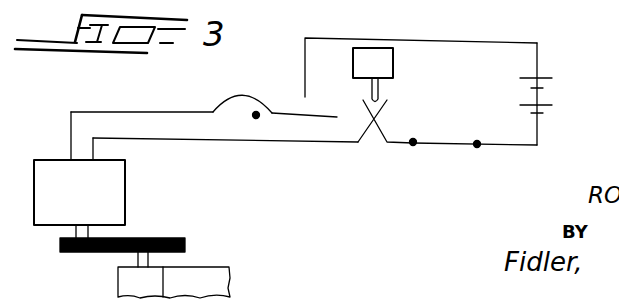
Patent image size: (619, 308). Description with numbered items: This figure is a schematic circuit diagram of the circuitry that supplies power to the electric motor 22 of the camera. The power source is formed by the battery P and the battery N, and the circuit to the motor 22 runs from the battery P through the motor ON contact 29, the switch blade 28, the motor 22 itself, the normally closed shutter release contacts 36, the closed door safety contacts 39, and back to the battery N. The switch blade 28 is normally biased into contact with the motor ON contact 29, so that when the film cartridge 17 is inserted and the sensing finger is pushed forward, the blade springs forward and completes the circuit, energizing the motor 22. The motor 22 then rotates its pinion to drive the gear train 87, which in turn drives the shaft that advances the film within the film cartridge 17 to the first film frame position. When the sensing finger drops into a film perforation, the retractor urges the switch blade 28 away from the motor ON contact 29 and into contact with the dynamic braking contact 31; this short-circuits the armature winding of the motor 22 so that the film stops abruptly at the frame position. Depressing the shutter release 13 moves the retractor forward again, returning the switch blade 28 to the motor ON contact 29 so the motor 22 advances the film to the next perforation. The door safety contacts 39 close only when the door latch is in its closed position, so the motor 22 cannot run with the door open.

The shutter release 13 is at (382, 63).
The film cartridge 17 is at (200, 278).
The motor 22 is at (79, 168).
The switch blade 28 is at (213, 110).
The motor ON contact 29 is at (305, 99).
The dynamic braking contact 31 is at (325, 118).
The shutter release contacts 36 is at (385, 110).
The door safety contacts 39 is at (481, 141).
The gear train 87 is at (141, 239).
The battery P is at (543, 78).
The battery N is at (548, 108).